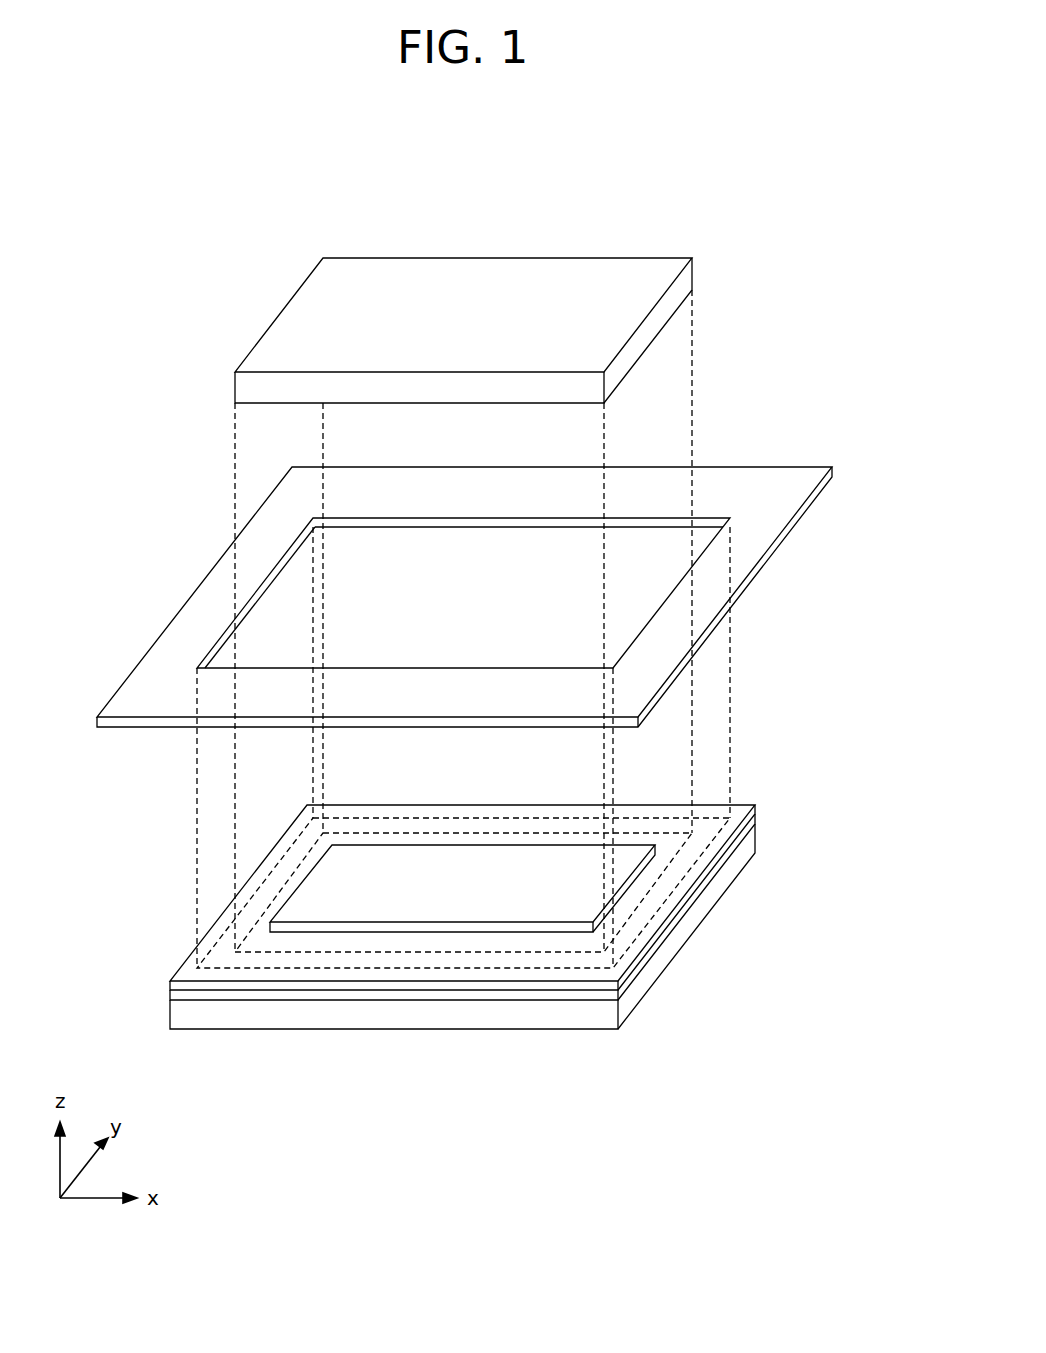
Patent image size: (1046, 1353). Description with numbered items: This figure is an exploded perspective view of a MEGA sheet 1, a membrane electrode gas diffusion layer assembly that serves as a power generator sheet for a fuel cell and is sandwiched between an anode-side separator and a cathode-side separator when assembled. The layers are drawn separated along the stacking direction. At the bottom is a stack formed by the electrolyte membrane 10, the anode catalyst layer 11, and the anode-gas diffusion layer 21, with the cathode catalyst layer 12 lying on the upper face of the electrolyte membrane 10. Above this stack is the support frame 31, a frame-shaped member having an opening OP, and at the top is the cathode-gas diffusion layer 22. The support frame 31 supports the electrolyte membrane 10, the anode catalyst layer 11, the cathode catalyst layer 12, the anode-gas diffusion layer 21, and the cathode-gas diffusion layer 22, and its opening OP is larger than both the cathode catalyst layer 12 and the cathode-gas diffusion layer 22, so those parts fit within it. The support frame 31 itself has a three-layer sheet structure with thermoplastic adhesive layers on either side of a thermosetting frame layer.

The MEGA sheet 1 is at (806, 127).
The cathode-gas diffusion layer 22 is at (610, 282).
The support frame 31 is at (484, 551).
The opening OP is at (642, 632).
The electrolyte membrane 10 is at (755, 812).
The anode catalyst layer 11 is at (755, 823).
The anode-gas diffusion layer 21 is at (755, 848).
The cathode catalyst layer 12 is at (447, 895).